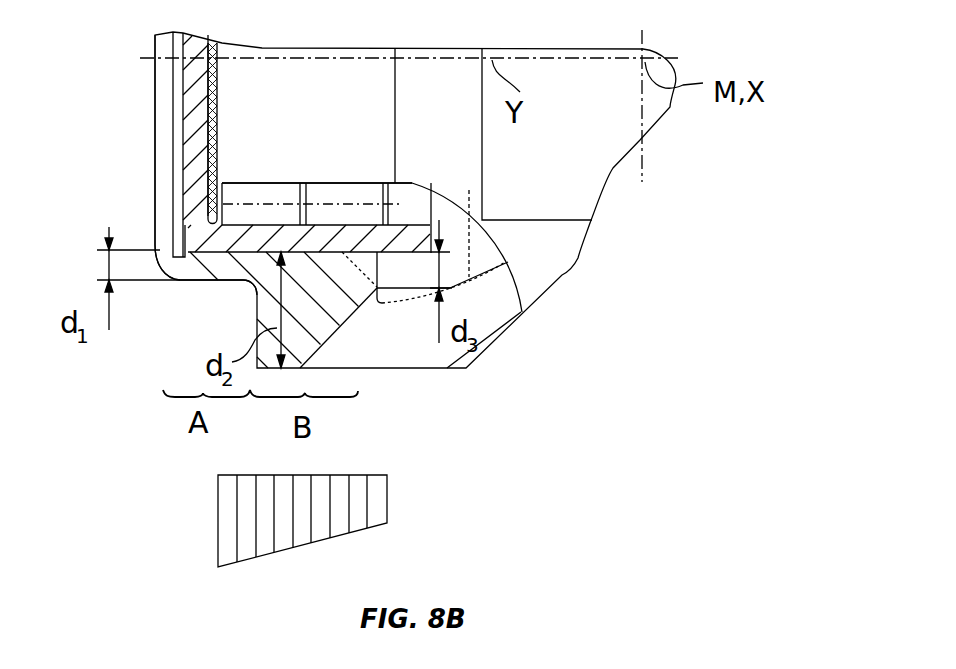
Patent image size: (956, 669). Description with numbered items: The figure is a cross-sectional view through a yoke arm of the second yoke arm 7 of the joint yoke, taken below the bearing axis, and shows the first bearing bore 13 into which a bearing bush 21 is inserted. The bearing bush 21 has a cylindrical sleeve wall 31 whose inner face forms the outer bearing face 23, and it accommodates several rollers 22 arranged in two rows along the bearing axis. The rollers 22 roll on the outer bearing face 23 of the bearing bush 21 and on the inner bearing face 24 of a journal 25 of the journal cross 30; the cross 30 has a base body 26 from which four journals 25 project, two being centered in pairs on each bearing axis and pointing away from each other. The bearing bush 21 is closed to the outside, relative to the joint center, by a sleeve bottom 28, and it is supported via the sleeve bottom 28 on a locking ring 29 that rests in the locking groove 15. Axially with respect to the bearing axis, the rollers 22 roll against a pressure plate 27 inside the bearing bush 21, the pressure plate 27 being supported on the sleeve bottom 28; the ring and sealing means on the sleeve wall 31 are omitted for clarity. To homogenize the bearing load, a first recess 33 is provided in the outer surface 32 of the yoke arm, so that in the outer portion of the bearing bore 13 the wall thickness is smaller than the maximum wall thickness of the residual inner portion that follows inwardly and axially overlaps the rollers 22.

The second yoke arm 7 is at (399, 378).
The first bearing bore 13 is at (316, 250).
The locking groove 15 is at (177, 250).
The bearing bush 21 is at (178, 143).
The rollers 22 is at (245, 193).
The outer bearing face 23 is at (252, 224).
The inner bearing face 24 is at (304, 186).
The journal 25 is at (236, 83).
The base body 26 is at (632, 125).
The pressure plate 27 is at (217, 198).
The sleeve bottom 28 is at (190, 109).
The locking ring 29 is at (175, 224).
The journal cross 30 is at (611, 172).
The sleeve wall 31 is at (412, 237).
The outer surface 32 is at (167, 265).
The first recess 33 is at (243, 292).